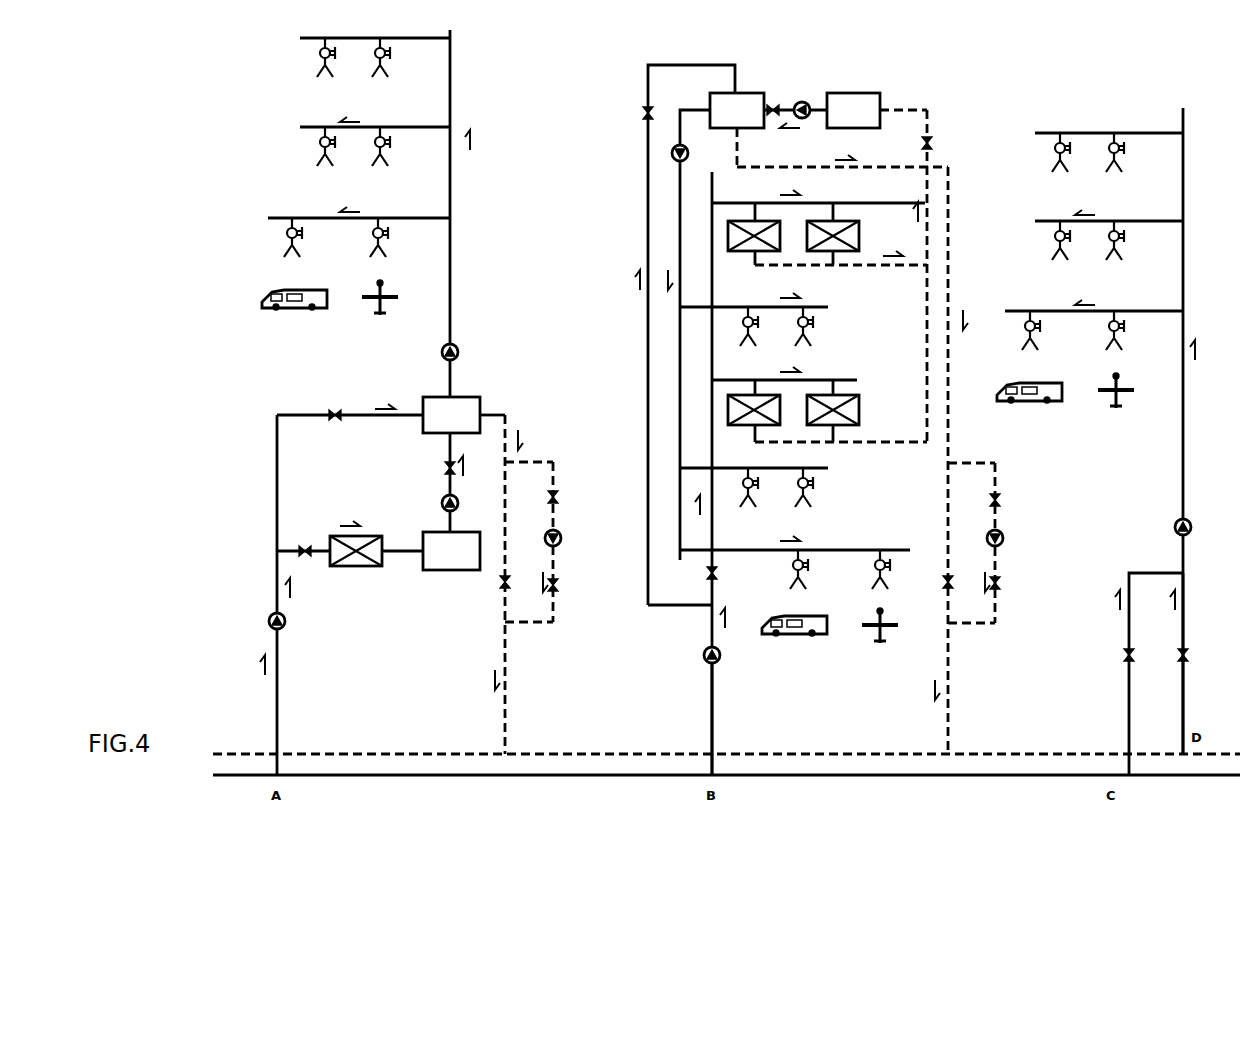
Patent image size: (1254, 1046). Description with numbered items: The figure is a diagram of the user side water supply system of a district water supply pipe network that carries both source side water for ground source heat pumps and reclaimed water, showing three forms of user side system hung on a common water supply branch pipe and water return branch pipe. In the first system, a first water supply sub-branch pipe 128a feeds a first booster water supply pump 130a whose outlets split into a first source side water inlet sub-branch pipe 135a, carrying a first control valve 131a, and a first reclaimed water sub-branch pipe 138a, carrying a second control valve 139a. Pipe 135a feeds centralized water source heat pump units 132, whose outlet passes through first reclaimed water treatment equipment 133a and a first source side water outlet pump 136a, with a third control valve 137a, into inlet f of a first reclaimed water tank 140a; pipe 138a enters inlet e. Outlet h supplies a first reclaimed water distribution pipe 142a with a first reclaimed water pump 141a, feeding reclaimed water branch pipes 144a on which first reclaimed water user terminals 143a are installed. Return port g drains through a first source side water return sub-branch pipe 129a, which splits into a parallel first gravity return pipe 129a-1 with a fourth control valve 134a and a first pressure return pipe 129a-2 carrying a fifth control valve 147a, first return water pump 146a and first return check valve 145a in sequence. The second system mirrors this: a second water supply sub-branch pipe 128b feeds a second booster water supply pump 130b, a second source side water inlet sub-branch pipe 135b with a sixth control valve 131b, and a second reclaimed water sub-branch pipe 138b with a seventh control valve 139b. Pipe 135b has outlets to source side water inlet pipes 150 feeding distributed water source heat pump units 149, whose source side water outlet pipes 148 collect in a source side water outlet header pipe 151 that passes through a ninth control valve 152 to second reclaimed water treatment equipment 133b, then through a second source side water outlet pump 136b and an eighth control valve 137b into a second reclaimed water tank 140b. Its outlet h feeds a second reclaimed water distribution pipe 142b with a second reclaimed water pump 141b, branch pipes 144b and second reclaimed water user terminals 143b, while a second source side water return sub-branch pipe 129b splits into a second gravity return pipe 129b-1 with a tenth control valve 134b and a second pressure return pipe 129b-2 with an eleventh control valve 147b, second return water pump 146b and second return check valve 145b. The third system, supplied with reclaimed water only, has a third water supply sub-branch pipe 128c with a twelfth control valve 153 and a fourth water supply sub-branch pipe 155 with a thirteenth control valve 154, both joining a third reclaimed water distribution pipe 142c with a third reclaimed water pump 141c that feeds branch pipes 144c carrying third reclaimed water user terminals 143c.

The first water supply sub-branch pipe 128a is at (278, 693).
The second water supply sub-branch pipe 128b is at (713, 722).
The third water supply sub-branch pipe 128c is at (1128, 697).
The first source side water return sub-branch pipe 129a is at (505, 692).
The first gravity return pipe 129a-1 is at (503, 620).
The first pressure return pipe 129a-2 is at (555, 626).
The second source side water return sub-branch pipe 129b is at (950, 720).
The second gravity return pipe 129b-1 is at (947, 618).
The second pressure return pipe 129b-2 is at (978, 628).
The first booster water supply pump 130a is at (271, 615).
The second booster water supply pump 130b is at (703, 658).
The first control valve 131a is at (306, 556).
The sixth control valve 131b is at (715, 575).
The centralized water source heat pump units 132 is at (370, 571).
The first reclaimed water treatment equipment 133a is at (460, 570).
The second reclaimed water treatment equipment 133b is at (863, 93).
The fourth control valve 134a is at (505, 582).
The tenth control valve 134b is at (947, 582).
The first source side water inlet sub-branch pipe 135a is at (290, 550).
The second source side water inlet sub-branch pipe 135b is at (710, 413).
The first source side water outlet pump 136a is at (441, 500).
The second source side water outlet pump 136b is at (806, 102).
The third control valve 137a is at (444, 466).
The eighth control valve 137b is at (775, 104).
The first reclaimed water sub-branch pipe 138a is at (295, 415).
The second reclaimed water sub-branch pipe 138b is at (646, 465).
The second control valve 139a is at (342, 414).
The seventh control valve 139b is at (646, 115).
The first reclaimed water tank 140a is at (472, 397).
The second reclaimed water tank 140b is at (742, 92).
The first reclaimed water pump 141a is at (458, 343).
The second reclaimed water pump 141b is at (674, 157).
The third reclaimed water pump 141c is at (1175, 522).
The first reclaimed water distribution pipe 142a is at (452, 282).
The second reclaimed water distribution pipe 142b is at (678, 443).
The third reclaimed water distribution pipe 142c is at (1182, 480).
The first reclaimed water user terminal 143a is at (322, 142).
The second reclaimed water user terminal 143b is at (813, 480).
The third reclaimed water user terminal 143c is at (1058, 230).
The reclaimed water branch pipe for first user side water supply system 144a is at (312, 127).
The reclaimed water branch pipe for second user side water supply system 144b is at (853, 548).
The reclaimed water branch pipe for third user side water supply system 144c is at (1047, 220).
The first return check valve 145a is at (557, 589).
The second return check valve 145b is at (1000, 587).
The first return water pump 146a is at (558, 542).
The second return water pump 146b is at (1001, 545).
The fifth control valve 147a is at (557, 500).
The eleventh control valve 147b is at (1000, 502).
The source side water outlet pipe 148 is at (860, 442).
The distributed water source heat pump units 149 is at (859, 402).
The source side water inlet pipe 150 is at (817, 378).
The source side water outlet header pipe 151 is at (927, 337).
The ninth control valve 152 is at (929, 136).
The twelfth control valve 153 is at (1127, 650).
The thirteenth control valve 154 is at (1186, 650).
The fourth water supply sub-branch pipe 155 is at (1185, 617).